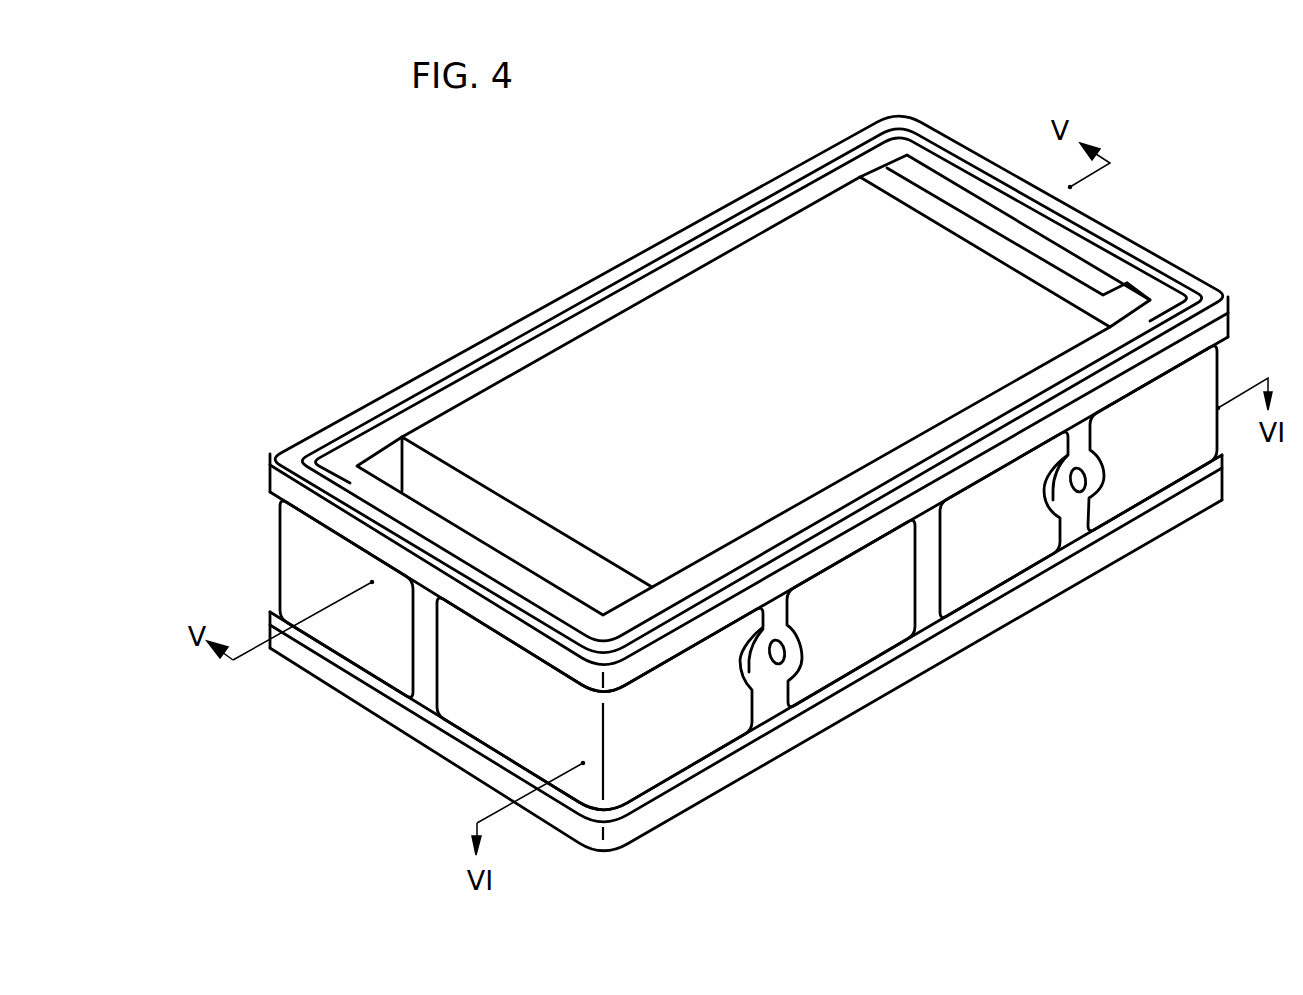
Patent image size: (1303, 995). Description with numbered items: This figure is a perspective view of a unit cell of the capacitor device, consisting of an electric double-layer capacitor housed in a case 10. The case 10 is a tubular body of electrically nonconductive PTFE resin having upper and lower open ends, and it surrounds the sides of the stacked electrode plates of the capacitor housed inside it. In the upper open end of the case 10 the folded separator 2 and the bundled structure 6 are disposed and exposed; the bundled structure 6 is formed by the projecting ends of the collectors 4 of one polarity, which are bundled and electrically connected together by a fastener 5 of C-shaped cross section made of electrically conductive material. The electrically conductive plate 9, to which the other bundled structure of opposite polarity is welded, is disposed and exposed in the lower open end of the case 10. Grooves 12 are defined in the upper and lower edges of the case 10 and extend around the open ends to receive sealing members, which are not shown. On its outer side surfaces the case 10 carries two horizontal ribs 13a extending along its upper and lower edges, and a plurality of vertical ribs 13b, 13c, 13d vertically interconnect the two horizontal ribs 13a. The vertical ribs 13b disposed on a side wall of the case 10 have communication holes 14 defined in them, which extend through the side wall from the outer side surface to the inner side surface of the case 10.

The separator 2 is at (568, 372).
The collectors 4 is at (1170, 281).
The fastener 5 is at (1108, 270).
The bundled structure 6 is at (1068, 262).
The electrically conductive plate 9 is at (913, 680).
The case 10 is at (372, 404).
The grooves 12 is at (677, 237).
The horizontal ribs 13a is at (303, 515).
The vertical ribs 13b is at (378, 675).
The vertical ribs 13c is at (790, 690).
The vertical ribs 13d is at (947, 584).
The communication holes 14 is at (777, 665).